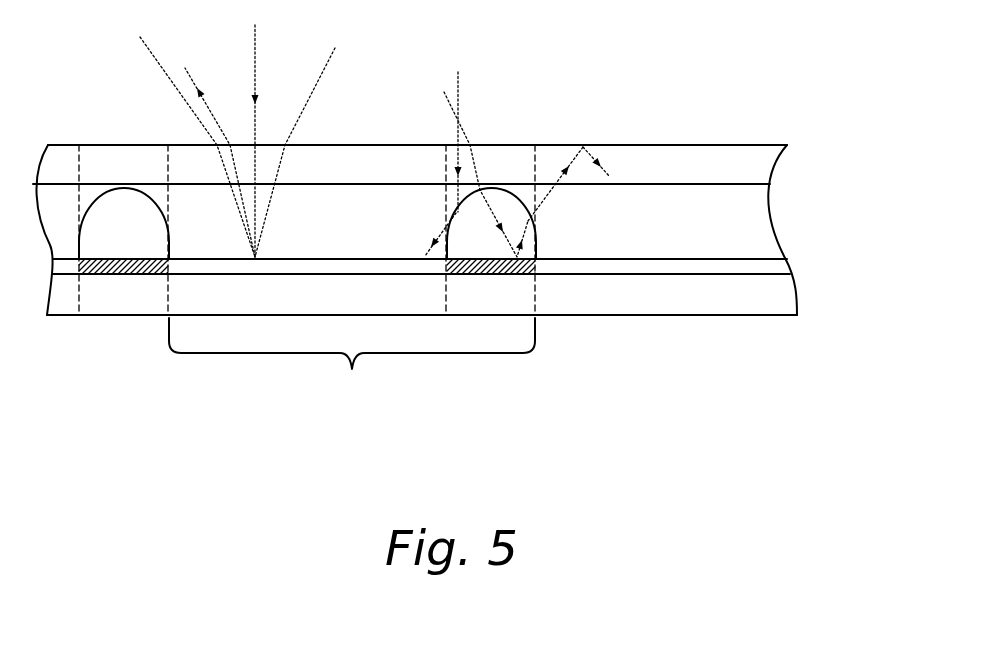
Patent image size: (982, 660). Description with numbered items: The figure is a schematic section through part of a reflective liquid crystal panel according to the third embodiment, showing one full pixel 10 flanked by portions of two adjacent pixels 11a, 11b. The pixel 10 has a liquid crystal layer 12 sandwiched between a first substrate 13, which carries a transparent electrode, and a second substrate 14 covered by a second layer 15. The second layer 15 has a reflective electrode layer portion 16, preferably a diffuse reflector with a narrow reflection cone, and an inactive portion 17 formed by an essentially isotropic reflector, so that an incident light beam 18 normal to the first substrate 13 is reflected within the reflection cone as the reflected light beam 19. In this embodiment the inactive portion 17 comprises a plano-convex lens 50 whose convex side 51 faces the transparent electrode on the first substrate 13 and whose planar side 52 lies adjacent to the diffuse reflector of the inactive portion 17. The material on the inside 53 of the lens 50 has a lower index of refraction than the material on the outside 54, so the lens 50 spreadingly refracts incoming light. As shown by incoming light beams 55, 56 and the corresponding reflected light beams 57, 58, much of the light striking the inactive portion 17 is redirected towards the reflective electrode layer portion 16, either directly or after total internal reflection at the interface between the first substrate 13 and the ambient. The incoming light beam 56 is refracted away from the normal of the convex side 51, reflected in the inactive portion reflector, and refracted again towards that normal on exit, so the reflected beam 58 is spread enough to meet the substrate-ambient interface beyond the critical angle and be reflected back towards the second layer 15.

The pixel 10 is at (307, 281).
The adjacent pixel 11a is at (93, 333).
The adjacent pixel 11b is at (648, 326).
The liquid crystal layer 12 is at (182, 210).
The first substrate 13 is at (190, 167).
The second substrate 14 is at (205, 295).
The second layer 15 is at (783, 266).
The reflective electrode layer portion 16 is at (288, 267).
The inactive portion 17 is at (463, 273).
The incident light beam 18 is at (255, 58).
The reflected light beam 19 is at (185, 76).
The plano-convex lens 50 is at (503, 210).
The convex side 51 is at (489, 188).
The planar side 52 is at (493, 273).
The inside of the lens 53 is at (460, 243).
The outside of the lens 54 is at (530, 195).
The incoming light beam 55 is at (458, 82).
The incoming light beam 56 is at (444, 93).
The reflected light beam 57 is at (438, 235).
The reflected light beam 58 is at (610, 175).